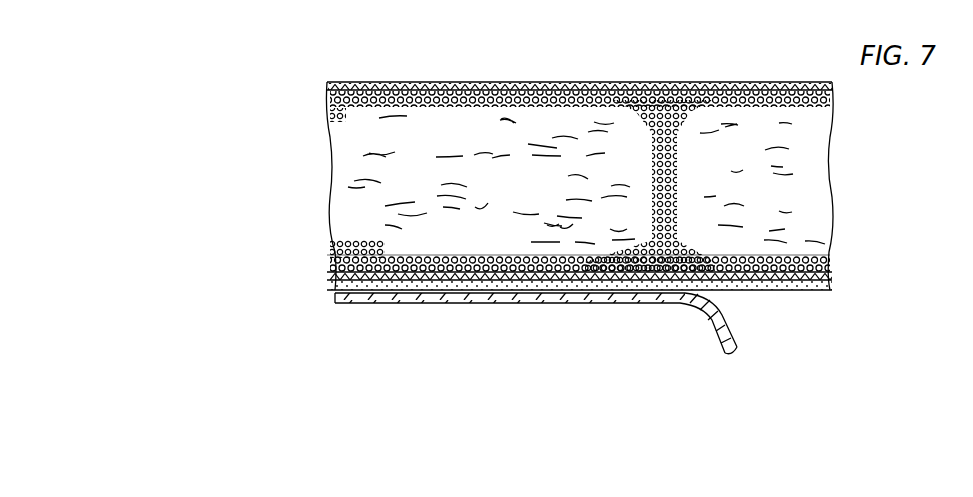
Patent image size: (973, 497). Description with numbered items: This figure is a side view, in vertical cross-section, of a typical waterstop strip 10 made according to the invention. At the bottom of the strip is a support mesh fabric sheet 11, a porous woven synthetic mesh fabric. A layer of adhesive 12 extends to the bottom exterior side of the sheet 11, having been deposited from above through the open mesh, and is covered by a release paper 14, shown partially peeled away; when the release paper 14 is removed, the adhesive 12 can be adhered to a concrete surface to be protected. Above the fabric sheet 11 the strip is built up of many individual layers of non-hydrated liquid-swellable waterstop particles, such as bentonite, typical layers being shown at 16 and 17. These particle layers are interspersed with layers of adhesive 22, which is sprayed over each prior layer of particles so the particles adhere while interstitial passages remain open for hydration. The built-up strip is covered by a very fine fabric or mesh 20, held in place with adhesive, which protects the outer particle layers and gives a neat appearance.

The waterstop strip 10 is at (300, 122).
The support mesh fabric sheet 11 is at (333, 277).
The layer of adhesive 12 is at (335, 288).
The release paper 14 is at (439, 303).
The layer of waterstop particles 16 is at (330, 265).
The layer of waterstop particles 17 is at (338, 260).
The fine fabric or mesh 20 is at (568, 82).
The adhesive 22 is at (360, 256).